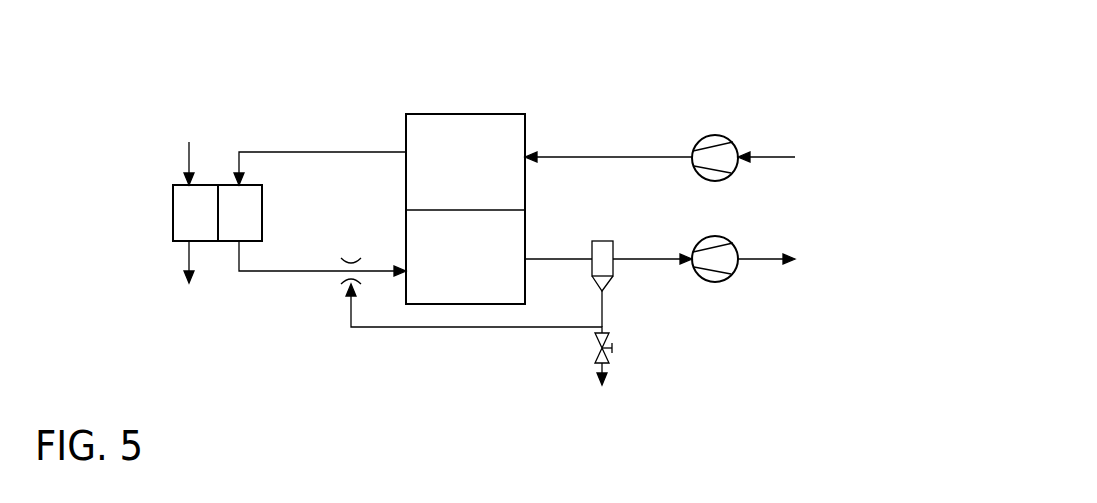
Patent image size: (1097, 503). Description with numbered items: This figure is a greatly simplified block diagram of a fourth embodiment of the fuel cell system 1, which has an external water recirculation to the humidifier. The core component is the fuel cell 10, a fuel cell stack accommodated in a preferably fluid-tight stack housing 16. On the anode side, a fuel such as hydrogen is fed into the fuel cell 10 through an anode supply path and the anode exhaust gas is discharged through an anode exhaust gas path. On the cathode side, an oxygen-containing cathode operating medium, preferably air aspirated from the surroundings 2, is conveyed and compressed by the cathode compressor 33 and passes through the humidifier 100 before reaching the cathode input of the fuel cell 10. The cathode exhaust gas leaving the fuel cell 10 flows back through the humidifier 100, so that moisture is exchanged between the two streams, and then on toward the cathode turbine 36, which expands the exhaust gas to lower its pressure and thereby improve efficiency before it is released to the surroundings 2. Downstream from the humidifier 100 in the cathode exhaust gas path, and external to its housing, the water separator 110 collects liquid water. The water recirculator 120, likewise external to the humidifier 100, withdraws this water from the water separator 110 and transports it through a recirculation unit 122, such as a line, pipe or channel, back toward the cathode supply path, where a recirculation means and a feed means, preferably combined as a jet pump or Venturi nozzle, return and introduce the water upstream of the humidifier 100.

The fuel cell system 1 is at (315, 58).
The surroundings 2 is at (852, 170).
The fuel cell 10 is at (221, 171).
The stack housing 16 is at (174, 215).
The cathode compressor 33 is at (733, 145).
The cathode turbine 36 is at (733, 269).
The humidifier 100 is at (492, 115).
The water separator 110 is at (612, 247).
The water recirculator 120 is at (492, 337).
The recirculation unit 122 is at (417, 327).